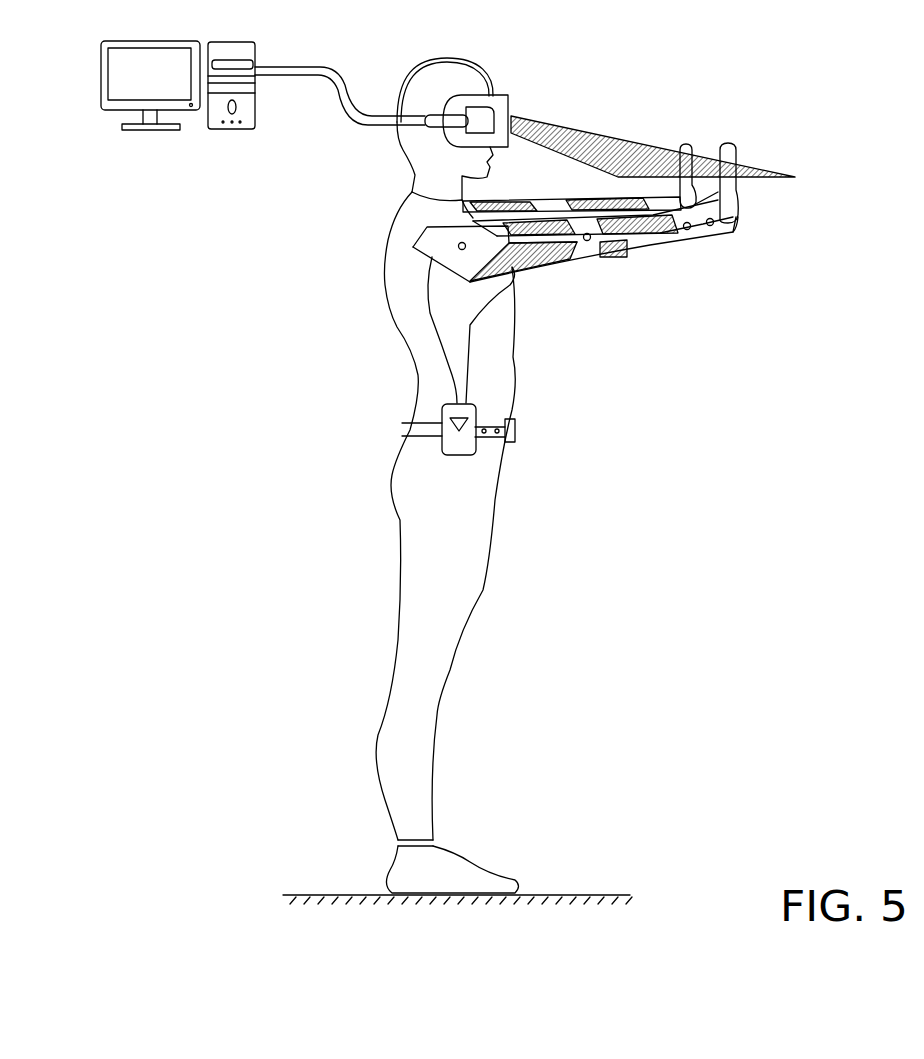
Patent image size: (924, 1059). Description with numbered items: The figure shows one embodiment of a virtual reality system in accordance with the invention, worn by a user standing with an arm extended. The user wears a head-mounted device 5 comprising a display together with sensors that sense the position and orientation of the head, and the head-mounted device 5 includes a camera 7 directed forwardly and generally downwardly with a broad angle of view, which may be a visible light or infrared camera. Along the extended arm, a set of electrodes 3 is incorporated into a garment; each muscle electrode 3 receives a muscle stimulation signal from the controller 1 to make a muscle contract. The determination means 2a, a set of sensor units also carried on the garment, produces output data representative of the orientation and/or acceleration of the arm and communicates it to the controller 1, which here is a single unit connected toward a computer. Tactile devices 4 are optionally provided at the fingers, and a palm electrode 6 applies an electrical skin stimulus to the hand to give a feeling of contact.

The controller 1 is at (264, 32).
The determination means 2a is at (458, 247).
The electrodes 3 is at (497, 202).
The tactile devices 4 is at (684, 145).
The head-mounted device 5 is at (494, 95).
The palm electrode 6 is at (711, 158).
The camera 7 is at (513, 116).